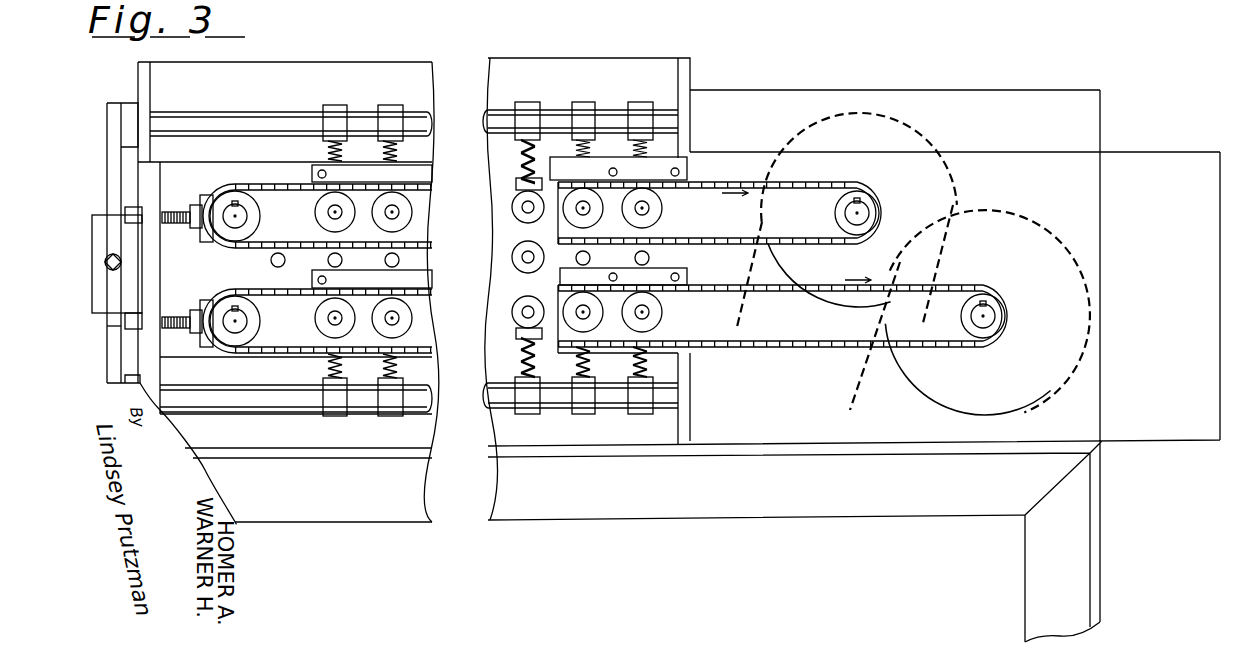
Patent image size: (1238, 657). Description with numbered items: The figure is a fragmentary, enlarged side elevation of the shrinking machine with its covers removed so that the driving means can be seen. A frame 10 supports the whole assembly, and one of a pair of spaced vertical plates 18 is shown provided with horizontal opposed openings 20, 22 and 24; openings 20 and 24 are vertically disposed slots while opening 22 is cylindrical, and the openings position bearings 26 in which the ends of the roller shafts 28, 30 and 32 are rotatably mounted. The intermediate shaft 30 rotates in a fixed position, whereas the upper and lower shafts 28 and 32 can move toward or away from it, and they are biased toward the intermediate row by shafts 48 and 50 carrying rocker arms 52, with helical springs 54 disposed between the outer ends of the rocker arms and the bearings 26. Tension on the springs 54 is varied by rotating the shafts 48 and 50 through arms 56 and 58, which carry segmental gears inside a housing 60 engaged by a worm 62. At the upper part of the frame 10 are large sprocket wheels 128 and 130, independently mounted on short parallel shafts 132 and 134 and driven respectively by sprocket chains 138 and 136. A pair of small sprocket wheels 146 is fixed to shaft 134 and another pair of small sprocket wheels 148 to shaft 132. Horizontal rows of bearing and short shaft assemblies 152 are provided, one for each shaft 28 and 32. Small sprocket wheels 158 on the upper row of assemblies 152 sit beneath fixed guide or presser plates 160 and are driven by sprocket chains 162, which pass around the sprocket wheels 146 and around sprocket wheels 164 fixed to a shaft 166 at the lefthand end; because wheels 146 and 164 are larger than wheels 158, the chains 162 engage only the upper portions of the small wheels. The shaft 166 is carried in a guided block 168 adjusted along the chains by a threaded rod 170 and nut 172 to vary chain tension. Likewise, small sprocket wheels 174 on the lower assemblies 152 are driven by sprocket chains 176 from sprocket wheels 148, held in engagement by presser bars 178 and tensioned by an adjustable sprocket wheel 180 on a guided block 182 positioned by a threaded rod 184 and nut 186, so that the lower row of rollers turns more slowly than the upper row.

The frame 10 is at (707, 514).
The vertical plate 18 is at (505, 63).
The opening 20 is at (518, 183).
The opening 22 is at (512, 265).
The opening 24 is at (512, 327).
The bearing 26 is at (512, 206).
The roller shaft 28 is at (521, 212).
The roller shaft 30 is at (522, 257).
The roller shaft 32 is at (528, 306).
The shaft 48 is at (223, 115).
The shaft 50 is at (247, 393).
The rocker arm 52 is at (390, 103).
The helical spring 54 is at (520, 148).
The arm 56 is at (107, 165).
The arm 58 is at (112, 328).
The housing 60 is at (96, 214).
The worm 62 is at (105, 265).
The large sprocket wheel 128 is at (990, 233).
The large sprocket wheel 130 is at (860, 130).
The short shaft 132 is at (987, 300).
The short shaft 134 is at (862, 203).
The sprocket chain 136 is at (748, 310).
The sprocket chain 138 is at (847, 398).
The small sprocket wheel 146 is at (840, 182).
The small sprocket wheel 148 is at (963, 323).
The bearing and short shaft assembly 152 is at (397, 210).
The small sprocket wheel 158 is at (317, 210).
The guide or presser plate 160 is at (663, 170).
The sprocket chain 162 is at (730, 180).
The sprocket wheel 164 is at (255, 207).
The shaft 166 is at (230, 225).
The guided block 168 is at (207, 192).
The threaded rod 170 is at (172, 207).
The nut 172 is at (123, 232).
The small sprocket wheel 174 is at (317, 323).
The sprocket chain 176 is at (752, 347).
The presser bar 178 is at (670, 275).
The adjustable sprocket wheel 180 is at (257, 308).
The guided block 182 is at (207, 298).
The threaded rod 184 is at (173, 317).
The nut 186 is at (138, 333).